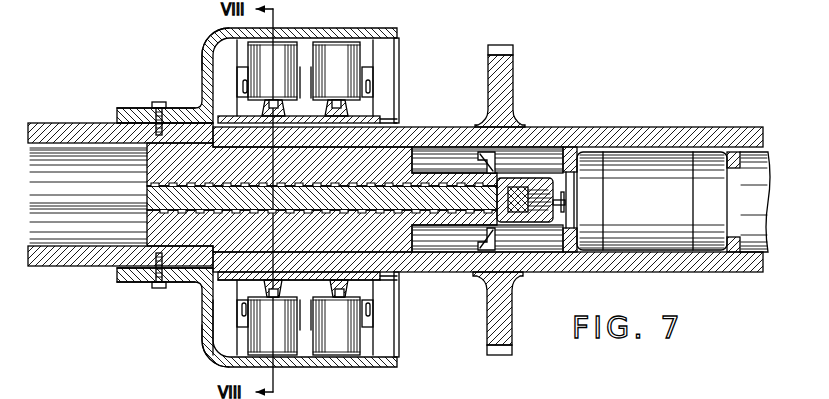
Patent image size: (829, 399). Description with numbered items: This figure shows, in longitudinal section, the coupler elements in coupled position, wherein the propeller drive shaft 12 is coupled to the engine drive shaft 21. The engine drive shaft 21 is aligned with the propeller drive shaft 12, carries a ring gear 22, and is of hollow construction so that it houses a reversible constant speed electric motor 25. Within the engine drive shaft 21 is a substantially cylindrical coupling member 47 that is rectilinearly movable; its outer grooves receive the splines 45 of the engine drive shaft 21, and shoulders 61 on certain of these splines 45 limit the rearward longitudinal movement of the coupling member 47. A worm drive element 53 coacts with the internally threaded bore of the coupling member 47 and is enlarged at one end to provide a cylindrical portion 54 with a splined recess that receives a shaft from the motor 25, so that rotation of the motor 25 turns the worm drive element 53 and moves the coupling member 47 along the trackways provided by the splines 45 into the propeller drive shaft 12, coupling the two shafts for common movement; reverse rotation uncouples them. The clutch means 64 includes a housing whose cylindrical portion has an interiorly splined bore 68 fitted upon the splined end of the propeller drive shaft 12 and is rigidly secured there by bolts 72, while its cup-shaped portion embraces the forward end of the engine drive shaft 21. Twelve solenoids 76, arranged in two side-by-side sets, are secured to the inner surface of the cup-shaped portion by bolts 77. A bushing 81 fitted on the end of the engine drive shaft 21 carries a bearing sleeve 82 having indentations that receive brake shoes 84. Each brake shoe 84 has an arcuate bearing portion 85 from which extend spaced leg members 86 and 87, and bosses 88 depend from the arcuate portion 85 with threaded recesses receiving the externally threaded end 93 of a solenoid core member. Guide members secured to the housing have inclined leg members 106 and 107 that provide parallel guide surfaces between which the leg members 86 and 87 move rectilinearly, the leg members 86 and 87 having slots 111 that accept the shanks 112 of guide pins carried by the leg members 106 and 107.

The propeller drive shaft 12 is at (68, 266).
The engine drive shaft 21 is at (565, 128).
The ring gear 22 is at (513, 75).
The reversible constant speed electric motor 25 is at (650, 157).
The splines 45 is at (432, 158).
The coupling member 47 is at (135, 284).
The worm drive element 53 is at (447, 214).
The cylindrical portion 54 is at (541, 215).
The shoulders 61 is at (480, 160).
The clutch means 64 is at (402, 35).
The interiorly splined bore 68 is at (118, 121).
The bolts 72 is at (158, 103).
The solenoids 76 is at (355, 62).
The bolts 77 is at (305, 40).
The bushing 81 is at (378, 279).
The bearing sleeve 82 is at (375, 290).
The brake shoes 84 is at (242, 320).
The arcuate bearing portion 85 is at (232, 295).
The leg member 86 is at (240, 342).
The leg member 87 is at (245, 72).
The bosses 88 is at (372, 108).
The externally threaded end 93 is at (262, 112).
The leg member 106 is at (224, 362).
The leg member 107 is at (240, 51).
The slots 111 is at (382, 90).
The shanks 112 is at (372, 75).